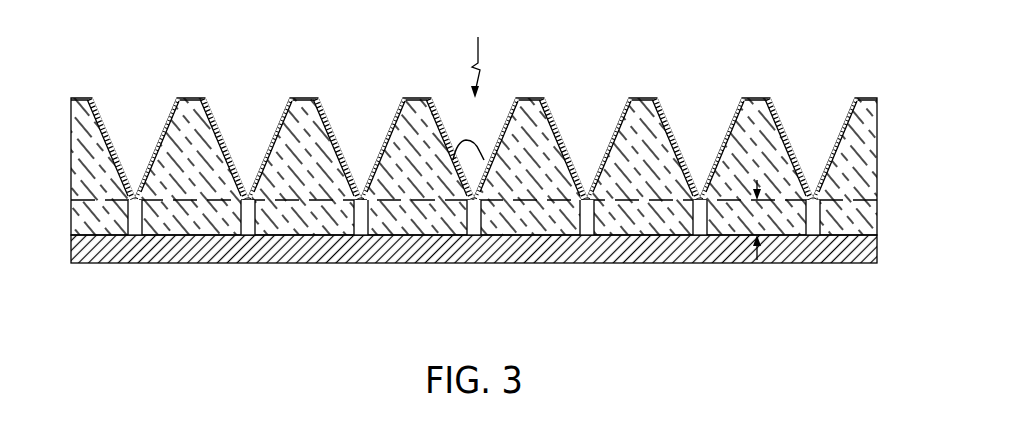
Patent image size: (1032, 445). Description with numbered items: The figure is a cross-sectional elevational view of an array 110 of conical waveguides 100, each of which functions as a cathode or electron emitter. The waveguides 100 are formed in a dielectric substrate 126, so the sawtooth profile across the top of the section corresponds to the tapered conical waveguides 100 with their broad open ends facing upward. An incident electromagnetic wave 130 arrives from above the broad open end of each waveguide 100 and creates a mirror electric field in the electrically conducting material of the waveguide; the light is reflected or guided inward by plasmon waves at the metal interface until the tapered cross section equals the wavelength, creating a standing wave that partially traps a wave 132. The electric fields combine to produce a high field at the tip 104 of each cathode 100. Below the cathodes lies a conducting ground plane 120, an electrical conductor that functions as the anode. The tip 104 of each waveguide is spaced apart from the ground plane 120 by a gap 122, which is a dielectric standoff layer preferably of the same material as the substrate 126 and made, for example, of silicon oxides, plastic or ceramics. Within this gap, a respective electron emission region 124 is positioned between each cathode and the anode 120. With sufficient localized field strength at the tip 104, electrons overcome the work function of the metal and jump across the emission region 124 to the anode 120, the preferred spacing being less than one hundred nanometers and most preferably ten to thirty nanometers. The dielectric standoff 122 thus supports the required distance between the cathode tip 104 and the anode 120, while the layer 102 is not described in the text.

The waveguide 100 is at (566, 147).
The textured structure 102 is at (693, 100).
The tip 104 is at (582, 200).
The array 110 is at (475, 169).
The conducting ground plane 120 is at (478, 252).
The gap 122 is at (788, 218).
The electron emission region 124 is at (608, 222).
The dielectric substrate 126 is at (768, 138).
The incident electromagnetic wave 130 is at (480, 61).
The wave 132 is at (465, 141).